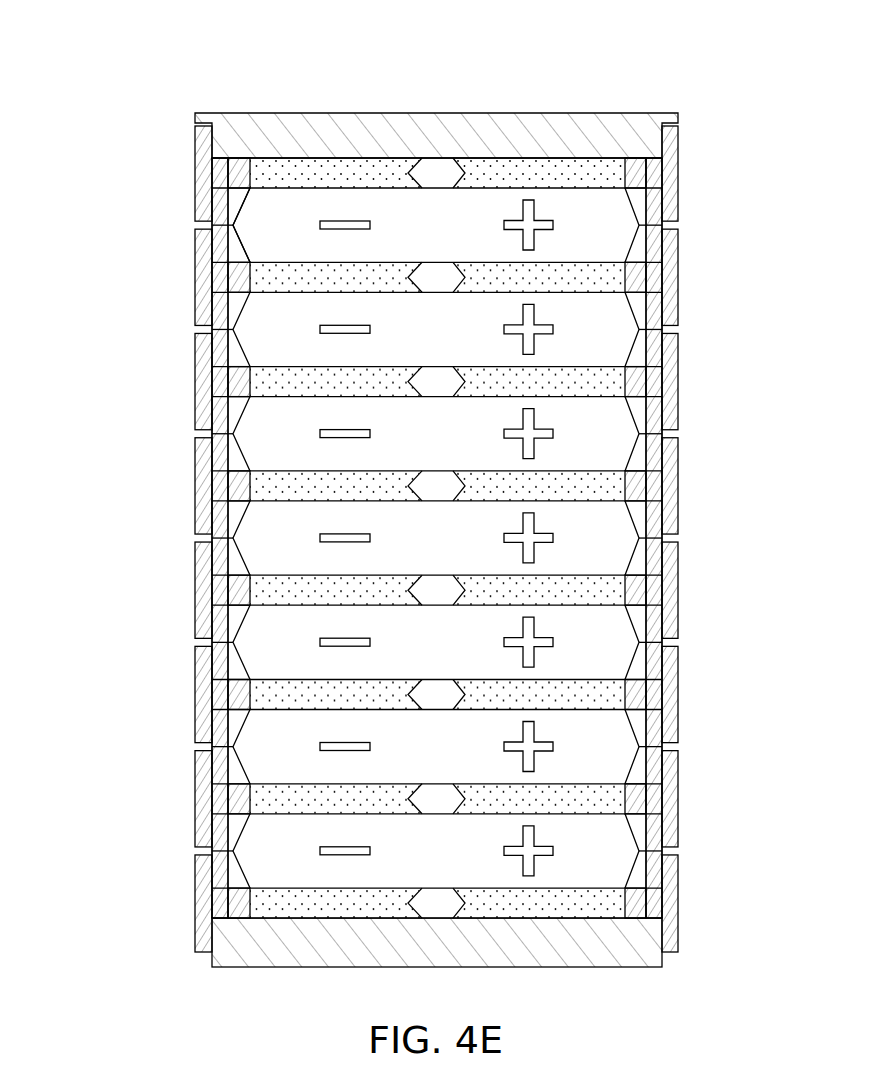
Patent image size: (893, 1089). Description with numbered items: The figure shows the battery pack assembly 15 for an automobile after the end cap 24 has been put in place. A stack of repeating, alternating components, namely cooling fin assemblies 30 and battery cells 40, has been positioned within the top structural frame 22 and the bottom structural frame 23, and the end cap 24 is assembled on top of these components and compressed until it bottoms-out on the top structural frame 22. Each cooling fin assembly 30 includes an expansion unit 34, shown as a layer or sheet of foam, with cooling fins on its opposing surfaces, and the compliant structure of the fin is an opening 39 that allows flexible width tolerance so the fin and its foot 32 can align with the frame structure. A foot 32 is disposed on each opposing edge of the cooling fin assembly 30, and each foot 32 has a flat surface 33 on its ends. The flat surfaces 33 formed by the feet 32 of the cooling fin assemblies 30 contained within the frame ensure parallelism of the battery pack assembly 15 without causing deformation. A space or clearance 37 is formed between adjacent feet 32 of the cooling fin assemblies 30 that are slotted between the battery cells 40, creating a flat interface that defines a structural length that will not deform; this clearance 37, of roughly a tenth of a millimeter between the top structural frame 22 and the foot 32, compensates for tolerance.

The battery pack assembly 15 is at (424, 513).
The top structural frame 22 is at (655, 217).
The bottom structural frame 23 is at (600, 968).
The end cap 24 is at (522, 130).
The cooling fin assembly 30 is at (424, 516).
The foot 32 is at (668, 172).
The flat surface 33 is at (437, 539).
The expansion unit 34 is at (343, 170).
The space or clearance 37 is at (672, 328).
The opening 39 is at (437, 167).
The battery cell 40 is at (247, 220).